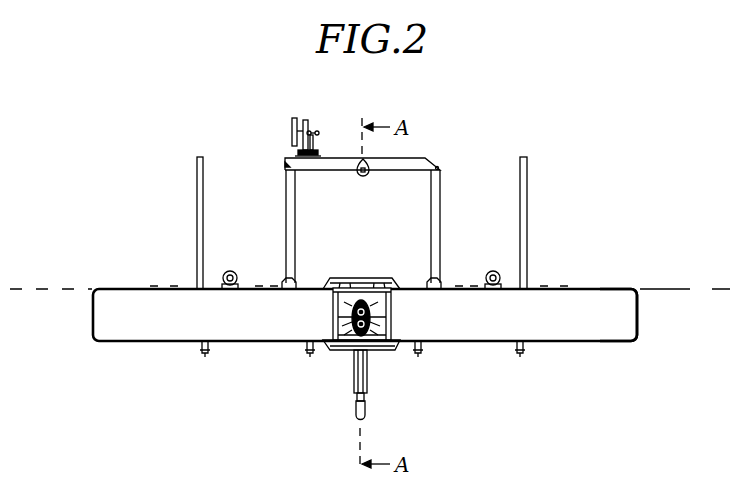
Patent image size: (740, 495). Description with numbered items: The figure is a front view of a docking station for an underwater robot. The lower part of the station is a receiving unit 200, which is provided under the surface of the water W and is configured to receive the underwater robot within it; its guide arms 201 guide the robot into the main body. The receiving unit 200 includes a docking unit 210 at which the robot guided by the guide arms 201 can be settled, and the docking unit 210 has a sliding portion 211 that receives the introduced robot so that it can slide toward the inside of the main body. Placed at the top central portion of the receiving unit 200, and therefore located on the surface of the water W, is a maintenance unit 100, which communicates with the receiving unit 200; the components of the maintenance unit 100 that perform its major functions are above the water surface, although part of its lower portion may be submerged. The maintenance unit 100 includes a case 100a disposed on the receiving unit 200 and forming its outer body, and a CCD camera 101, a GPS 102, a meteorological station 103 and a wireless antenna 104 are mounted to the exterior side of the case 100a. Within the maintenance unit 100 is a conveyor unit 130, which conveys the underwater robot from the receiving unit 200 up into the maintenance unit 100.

The maintenance unit 100 is at (369, 194).
The case 100a is at (440, 218).
The CCD camera 101 is at (362, 177).
The GPS 102 is at (298, 152).
The meteorological station 103 is at (317, 131).
The wireless antenna 104 is at (292, 128).
The conveyor unit 130 is at (390, 277).
The receiving unit 200 is at (534, 271).
The guide arms 201 is at (605, 288).
The docking unit 210 is at (375, 354).
The sliding portion 211 is at (350, 360).
The water W is at (673, 289).